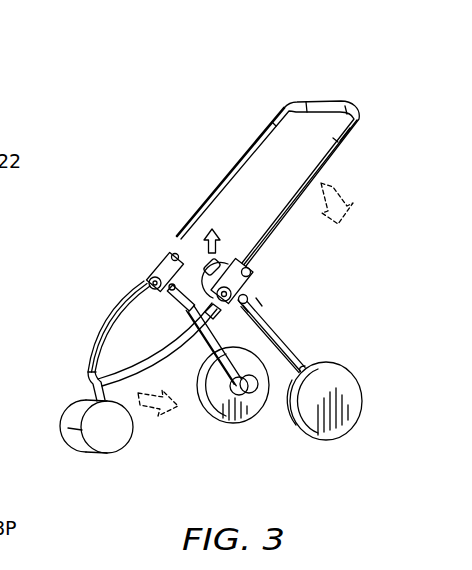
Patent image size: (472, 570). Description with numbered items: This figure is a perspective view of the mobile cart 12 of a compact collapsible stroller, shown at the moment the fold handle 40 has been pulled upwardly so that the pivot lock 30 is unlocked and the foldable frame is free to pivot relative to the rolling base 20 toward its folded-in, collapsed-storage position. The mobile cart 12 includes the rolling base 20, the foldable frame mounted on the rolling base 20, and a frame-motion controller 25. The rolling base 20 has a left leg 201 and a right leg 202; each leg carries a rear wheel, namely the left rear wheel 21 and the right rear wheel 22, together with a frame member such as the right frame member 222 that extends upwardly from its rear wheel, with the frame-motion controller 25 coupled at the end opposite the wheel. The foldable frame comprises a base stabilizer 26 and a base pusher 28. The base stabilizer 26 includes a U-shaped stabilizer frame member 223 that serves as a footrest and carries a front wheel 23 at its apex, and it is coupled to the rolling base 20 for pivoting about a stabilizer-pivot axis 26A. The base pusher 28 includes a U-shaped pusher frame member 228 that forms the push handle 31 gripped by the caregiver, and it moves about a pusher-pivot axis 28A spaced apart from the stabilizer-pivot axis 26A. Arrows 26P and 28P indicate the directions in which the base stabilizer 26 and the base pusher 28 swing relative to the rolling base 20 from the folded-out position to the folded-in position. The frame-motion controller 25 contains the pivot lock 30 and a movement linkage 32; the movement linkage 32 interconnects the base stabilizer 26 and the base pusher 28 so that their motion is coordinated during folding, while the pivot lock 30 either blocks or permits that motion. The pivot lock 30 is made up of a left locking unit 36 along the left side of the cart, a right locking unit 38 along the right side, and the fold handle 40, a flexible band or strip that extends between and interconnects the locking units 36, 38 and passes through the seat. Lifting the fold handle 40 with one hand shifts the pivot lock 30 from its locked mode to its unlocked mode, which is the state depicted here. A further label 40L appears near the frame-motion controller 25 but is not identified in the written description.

The mobile cart 12 is at (138, 182).
The rolling base 20 is at (291, 346).
The left leg 201 is at (195, 405).
The right leg 202 is at (285, 418).
The left rear wheel 21 is at (230, 423).
The right rear wheel 22 is at (317, 438).
The right frame member 222 is at (305, 364).
The U-shaped stabilizer frame member 223 is at (88, 364).
The front wheel 23 is at (82, 447).
The frame-motion controller 25 is at (274, 288).
The base stabilizer 26 is at (98, 333).
The stabilizer-pivot axis 26A is at (155, 286).
The arrow 26P is at (157, 413).
The base pusher 28 is at (230, 167).
The pusher-pivot axis 28A is at (160, 258).
The arrow 28P is at (351, 217).
The U-shaped pusher frame member 228 is at (334, 164).
The pivot lock 30 is at (264, 305).
The push handle 31 is at (334, 97).
The movement linkage 32 is at (262, 265).
The left locking unit 36 is at (163, 298).
The right locking unit 38 is at (203, 316).
The fold handle 40 is at (197, 266).
The release button 40L is at (220, 247).